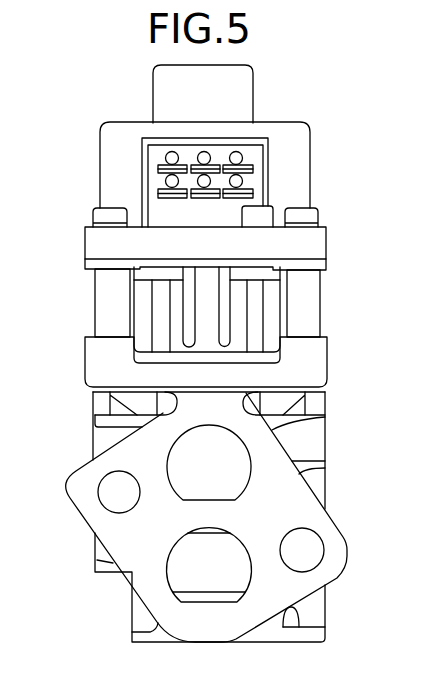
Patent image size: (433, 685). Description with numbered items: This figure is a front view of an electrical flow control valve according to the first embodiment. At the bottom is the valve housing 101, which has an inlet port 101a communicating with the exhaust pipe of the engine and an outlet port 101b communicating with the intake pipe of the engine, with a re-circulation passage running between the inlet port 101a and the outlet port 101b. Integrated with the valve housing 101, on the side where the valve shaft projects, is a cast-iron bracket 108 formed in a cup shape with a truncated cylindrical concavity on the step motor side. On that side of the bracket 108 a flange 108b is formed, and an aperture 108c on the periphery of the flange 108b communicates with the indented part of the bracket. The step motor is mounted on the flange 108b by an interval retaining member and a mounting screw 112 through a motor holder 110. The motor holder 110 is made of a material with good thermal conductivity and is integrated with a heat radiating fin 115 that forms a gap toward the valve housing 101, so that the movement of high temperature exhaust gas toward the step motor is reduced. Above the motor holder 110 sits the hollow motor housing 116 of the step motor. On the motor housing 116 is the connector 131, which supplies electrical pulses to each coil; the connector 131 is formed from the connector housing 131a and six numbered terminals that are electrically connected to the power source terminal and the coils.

The valve housing 101 is at (317, 485).
The inlet port 101a is at (180, 582).
The outlet port 101b is at (183, 452).
The bracket 108 is at (323, 368).
The flange 108b is at (322, 336).
The aperture 108c is at (302, 405).
The motor holder 110 is at (327, 258).
The mounting screw 112 is at (315, 212).
The heat radiating fin 115 is at (228, 315).
The motor housing 116 is at (298, 168).
The connector 131 is at (253, 153).
The connector housing 131a is at (243, 138).